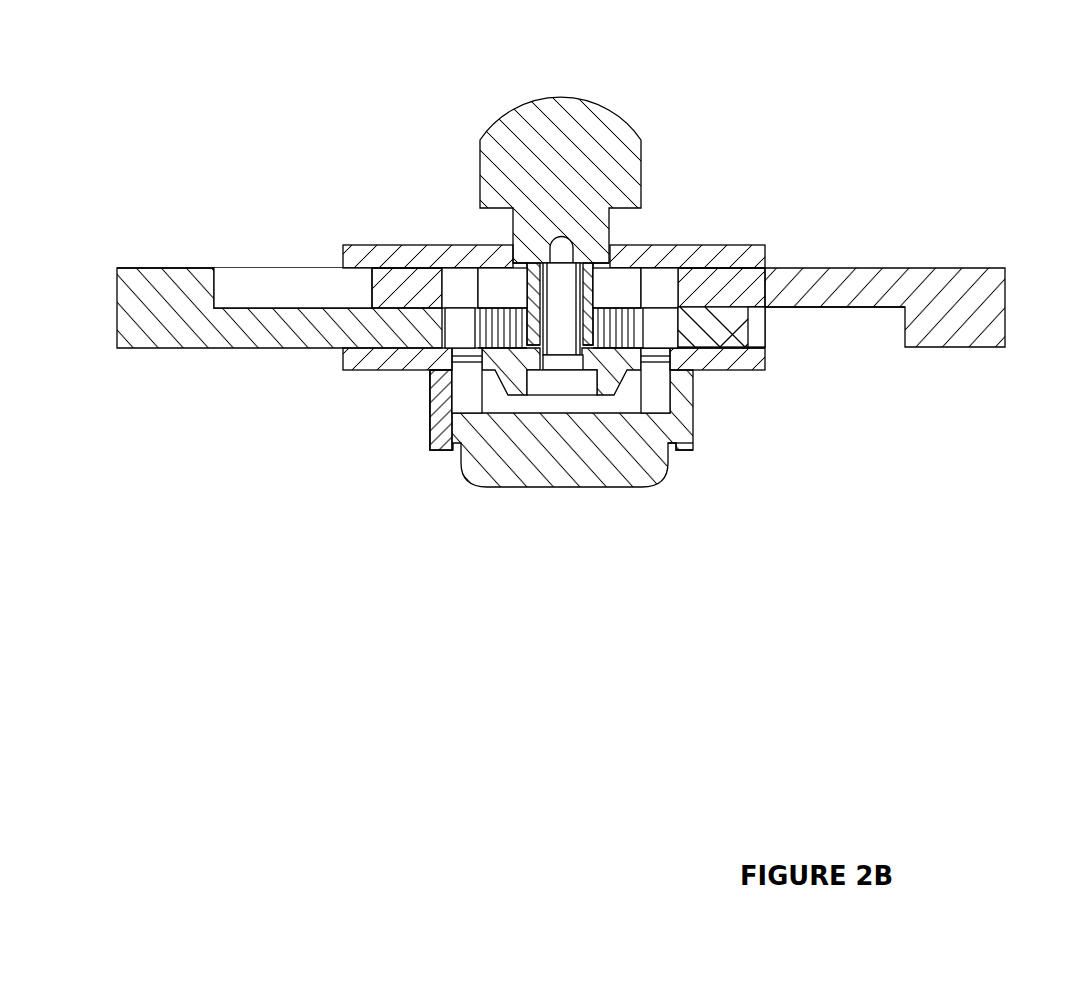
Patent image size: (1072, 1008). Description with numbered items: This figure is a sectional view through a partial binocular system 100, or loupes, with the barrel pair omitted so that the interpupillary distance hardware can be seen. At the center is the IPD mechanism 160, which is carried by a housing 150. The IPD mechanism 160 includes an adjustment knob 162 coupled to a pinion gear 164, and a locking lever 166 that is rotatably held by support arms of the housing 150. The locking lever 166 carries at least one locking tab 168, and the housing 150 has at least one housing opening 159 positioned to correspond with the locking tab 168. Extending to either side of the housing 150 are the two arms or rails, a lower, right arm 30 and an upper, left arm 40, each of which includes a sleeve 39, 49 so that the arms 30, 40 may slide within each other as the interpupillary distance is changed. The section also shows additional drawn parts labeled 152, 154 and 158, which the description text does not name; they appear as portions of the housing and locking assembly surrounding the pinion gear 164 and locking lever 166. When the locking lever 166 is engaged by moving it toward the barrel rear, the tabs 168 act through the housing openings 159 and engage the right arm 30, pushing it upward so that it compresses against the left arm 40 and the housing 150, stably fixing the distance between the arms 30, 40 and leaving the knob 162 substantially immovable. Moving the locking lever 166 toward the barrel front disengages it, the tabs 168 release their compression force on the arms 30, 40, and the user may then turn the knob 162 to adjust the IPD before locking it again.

The partial binocular system 100 is at (513, 796).
The right arm 30 is at (285, 289).
The sleeve 39 is at (278, 292).
The left arm 40 is at (1007, 318).
The sleeve 49 is at (862, 313).
The housing 150 is at (360, 245).
The upper bushing flange 152 is at (727, 244).
The washer 154 is at (748, 373).
The retaining lip 158 is at (679, 453).
The housing opening 159 is at (430, 372).
The IPD mechanism 160 is at (560, 158).
The knob 162 is at (617, 112).
The pinion gear 164 is at (612, 262).
The locking lever 166 is at (559, 487).
The locking tab 168 is at (462, 380).